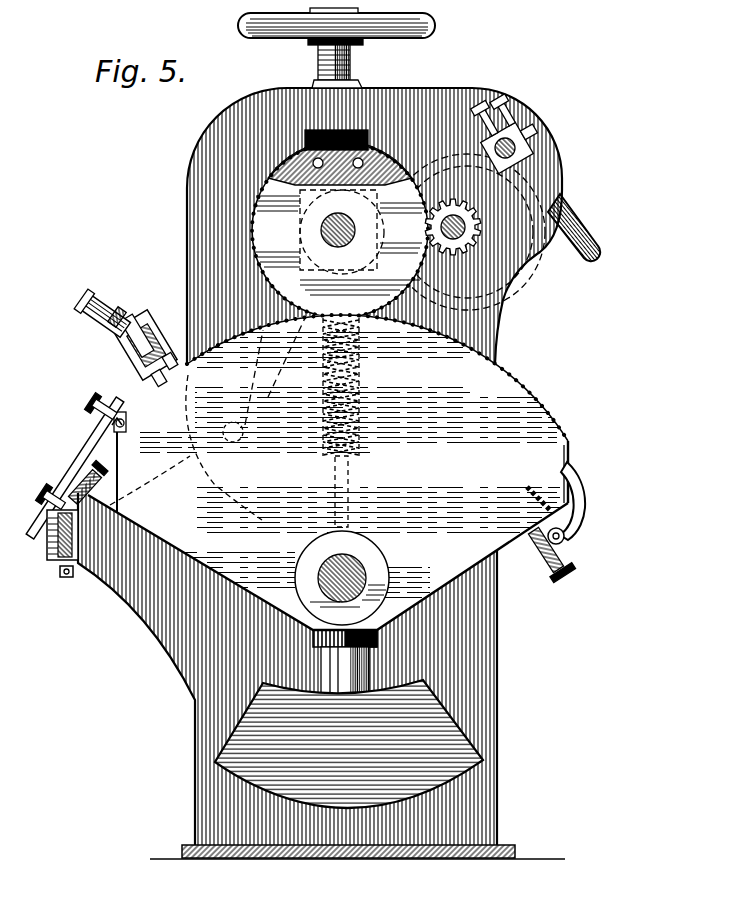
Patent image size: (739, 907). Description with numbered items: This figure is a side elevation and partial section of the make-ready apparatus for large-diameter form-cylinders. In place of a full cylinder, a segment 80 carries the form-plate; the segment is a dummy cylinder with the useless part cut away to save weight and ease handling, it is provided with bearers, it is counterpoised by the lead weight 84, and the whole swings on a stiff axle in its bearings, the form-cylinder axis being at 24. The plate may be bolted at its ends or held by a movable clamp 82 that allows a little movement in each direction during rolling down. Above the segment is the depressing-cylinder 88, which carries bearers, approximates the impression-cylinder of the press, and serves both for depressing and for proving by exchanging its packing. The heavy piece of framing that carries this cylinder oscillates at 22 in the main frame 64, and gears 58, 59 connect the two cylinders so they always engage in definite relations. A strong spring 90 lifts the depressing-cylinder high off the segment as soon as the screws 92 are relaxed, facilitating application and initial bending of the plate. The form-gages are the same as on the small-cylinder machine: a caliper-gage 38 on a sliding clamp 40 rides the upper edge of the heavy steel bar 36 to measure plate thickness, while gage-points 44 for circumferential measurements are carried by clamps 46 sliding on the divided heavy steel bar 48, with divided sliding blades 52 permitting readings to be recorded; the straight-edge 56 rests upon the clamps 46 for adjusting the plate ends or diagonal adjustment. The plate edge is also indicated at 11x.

The screws 92 is at (354, 60).
The gear 58 is at (251, 222).
The cylinder 88 is at (340, 224).
The axis of the form-cylinder 24 is at (368, 228).
The caliper-gage 38 is at (100, 294).
The heavy steel bar 36 is at (151, 318).
The sliding clamp 40 is at (128, 347).
The gage-points 44 is at (126, 414).
The sliding blades 52 is at (87, 452).
The straight-edge 56 is at (103, 470).
The clamps 46 is at (52, 540).
The heavy steel bar 48 is at (59, 566).
The segment 80 is at (328, 472).
The gear 59 is at (526, 400).
The edge of disc 11x is at (569, 458).
The movable clamp 82 is at (577, 521).
The strong spring 90 is at (362, 394).
The oscillation point of framing 22 is at (358, 560).
The main frame 64 is at (490, 671).
The lead weight 84 is at (349, 719).